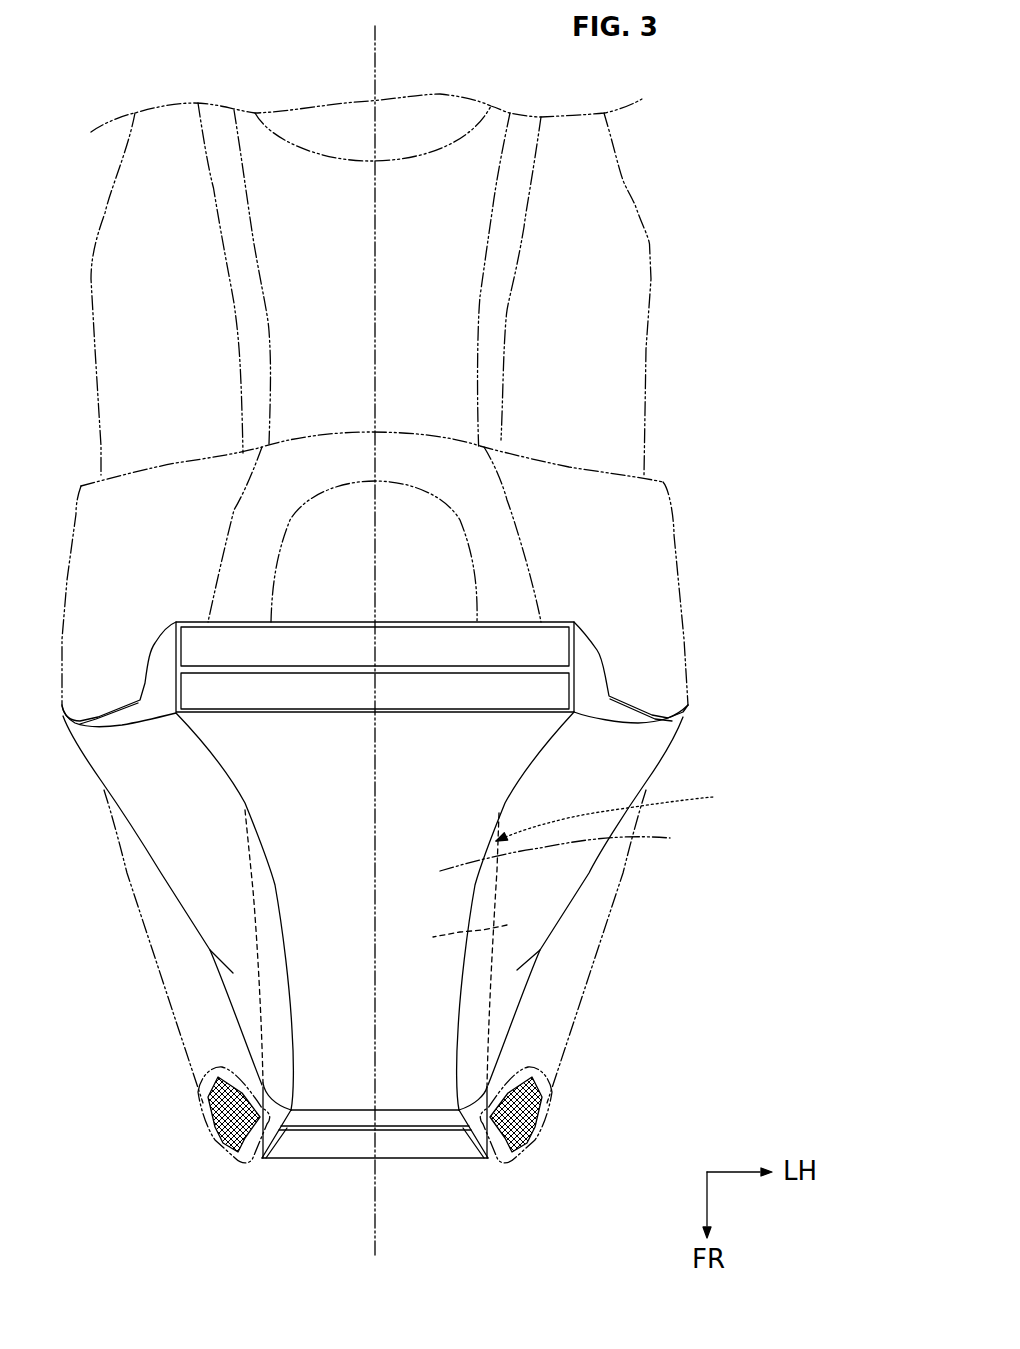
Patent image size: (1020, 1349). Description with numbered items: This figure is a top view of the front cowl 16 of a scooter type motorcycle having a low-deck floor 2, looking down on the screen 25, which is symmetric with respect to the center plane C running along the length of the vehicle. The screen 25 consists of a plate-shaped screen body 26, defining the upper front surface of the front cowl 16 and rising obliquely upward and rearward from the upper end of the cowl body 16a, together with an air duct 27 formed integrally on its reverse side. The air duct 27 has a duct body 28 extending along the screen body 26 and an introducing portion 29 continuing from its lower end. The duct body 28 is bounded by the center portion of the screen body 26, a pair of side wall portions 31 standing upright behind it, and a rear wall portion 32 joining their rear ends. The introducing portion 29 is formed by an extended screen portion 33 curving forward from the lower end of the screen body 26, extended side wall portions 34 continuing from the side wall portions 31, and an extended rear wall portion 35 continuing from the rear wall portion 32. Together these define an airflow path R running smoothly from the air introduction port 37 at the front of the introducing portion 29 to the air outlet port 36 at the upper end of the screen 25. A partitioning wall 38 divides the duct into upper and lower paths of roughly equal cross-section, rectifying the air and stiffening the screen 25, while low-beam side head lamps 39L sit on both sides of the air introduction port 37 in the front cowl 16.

The low-deck floor 2 is at (642, 205).
The front cowl 16 is at (652, 879).
The cowl body 16a is at (625, 916).
The screen 25 is at (598, 606).
The screen body 26 is at (476, 772).
The air duct 27 is at (652, 939).
The duct body 28 is at (655, 812).
The introducing portion 29 is at (493, 1088).
The side wall portions 31 is at (270, 878).
The rear wall portion 32 is at (492, 923).
The extended screen portion 33 is at (360, 1097).
The extended side wall portions 34 is at (263, 1134).
The extended rear wall portion 35 is at (437, 1160).
The air outlet port 36 is at (510, 643).
The air introduction port 37 is at (410, 1147).
The partitioning wall 38 is at (447, 1133).
The low-beam side head lamps 39L is at (233, 1147).
The center plane C is at (375, 63).
The airflow path R is at (568, 849).